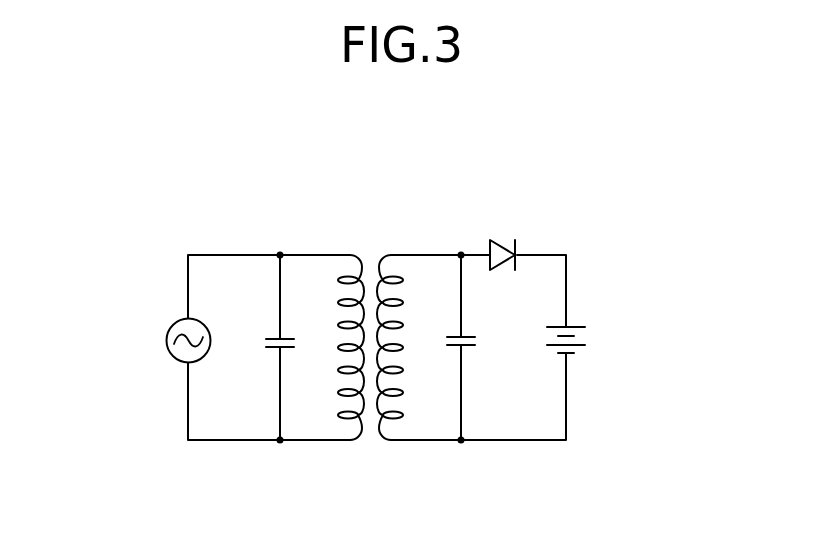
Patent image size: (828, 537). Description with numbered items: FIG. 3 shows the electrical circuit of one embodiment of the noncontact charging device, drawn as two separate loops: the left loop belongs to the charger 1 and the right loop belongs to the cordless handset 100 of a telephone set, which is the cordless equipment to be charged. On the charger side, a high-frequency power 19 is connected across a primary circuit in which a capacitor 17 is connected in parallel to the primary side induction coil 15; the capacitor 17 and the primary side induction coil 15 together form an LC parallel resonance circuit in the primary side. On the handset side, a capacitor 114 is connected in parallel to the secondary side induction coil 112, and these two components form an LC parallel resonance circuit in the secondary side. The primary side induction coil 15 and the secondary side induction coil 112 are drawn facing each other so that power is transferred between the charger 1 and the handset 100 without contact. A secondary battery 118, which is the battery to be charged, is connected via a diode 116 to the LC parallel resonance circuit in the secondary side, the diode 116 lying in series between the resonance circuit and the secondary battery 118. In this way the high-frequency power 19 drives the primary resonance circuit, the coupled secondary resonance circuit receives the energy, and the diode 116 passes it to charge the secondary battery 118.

The charger 1 is at (240, 452).
The high-frequency power 19 is at (167, 353).
The capacitor 17 is at (298, 345).
The primary side induction coil 15 is at (343, 371).
The secondary side induction coil 112 is at (393, 328).
The cordless handset 100 is at (494, 452).
The capacitor 114 is at (478, 345).
The diode 116 is at (503, 246).
The secondary battery 118 is at (586, 335).